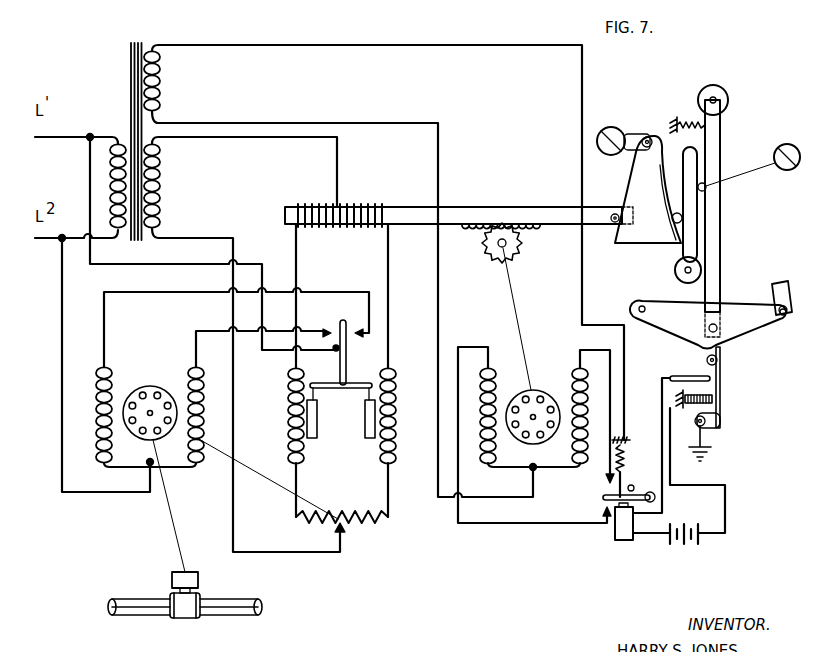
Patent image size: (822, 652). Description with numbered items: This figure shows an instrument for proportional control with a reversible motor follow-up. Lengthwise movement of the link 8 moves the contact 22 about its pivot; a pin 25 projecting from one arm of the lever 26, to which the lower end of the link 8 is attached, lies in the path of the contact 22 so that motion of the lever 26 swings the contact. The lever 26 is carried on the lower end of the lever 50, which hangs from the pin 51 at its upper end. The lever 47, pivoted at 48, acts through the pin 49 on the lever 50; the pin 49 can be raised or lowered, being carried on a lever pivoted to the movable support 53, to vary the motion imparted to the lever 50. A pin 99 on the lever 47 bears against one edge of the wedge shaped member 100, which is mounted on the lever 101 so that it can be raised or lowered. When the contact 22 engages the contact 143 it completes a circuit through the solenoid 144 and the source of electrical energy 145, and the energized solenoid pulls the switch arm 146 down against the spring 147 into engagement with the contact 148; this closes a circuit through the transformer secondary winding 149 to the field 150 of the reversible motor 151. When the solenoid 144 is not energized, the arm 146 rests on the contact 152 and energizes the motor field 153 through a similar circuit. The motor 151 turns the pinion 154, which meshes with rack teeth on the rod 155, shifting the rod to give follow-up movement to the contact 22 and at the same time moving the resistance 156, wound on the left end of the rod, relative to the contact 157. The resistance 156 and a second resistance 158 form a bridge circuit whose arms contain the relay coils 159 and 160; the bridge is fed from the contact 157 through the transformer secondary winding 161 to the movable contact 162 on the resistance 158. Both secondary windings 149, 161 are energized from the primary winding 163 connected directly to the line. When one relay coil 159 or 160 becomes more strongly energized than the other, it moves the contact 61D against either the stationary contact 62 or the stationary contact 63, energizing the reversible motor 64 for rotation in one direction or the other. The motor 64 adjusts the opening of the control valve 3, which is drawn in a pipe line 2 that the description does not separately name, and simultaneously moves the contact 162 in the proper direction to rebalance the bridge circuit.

The pipe 2 is at (150, 607).
The control valve 3 is at (186, 572).
The link 8 is at (786, 283).
The contact 22 is at (720, 388).
The pin 25 is at (718, 358).
The lever 26 is at (738, 309).
The lever 47 is at (691, 203).
The pivot 48 is at (683, 271).
The pin 49 is at (705, 184).
The lever 50 is at (721, 213).
The pin 51 is at (715, 98).
The movable support 53 is at (789, 145).
The contact 61D is at (351, 315).
The stationary contact 62 is at (360, 337).
The stationary contact 63 is at (326, 331).
The reversible motor 64 is at (143, 392).
The pin 99 is at (682, 221).
The wedge shaped member 100 is at (625, 246).
The lever 101 is at (630, 135).
The contact 143 is at (687, 376).
The solenoid 144 is at (625, 542).
The source of electrical energy 145 is at (685, 527).
The switch arm 146 is at (602, 498).
The spring 147 is at (624, 460).
The contact 148 is at (605, 516).
The transformer secondary winding 149 is at (162, 92).
The field 150 is at (497, 385).
The reversible motor 151 is at (535, 391).
The contact 152 is at (613, 214).
The motor field 153 is at (574, 372).
The pinion 154 is at (488, 254).
The rod 155 is at (485, 210).
The resistance 156 is at (303, 206).
The contact 157 is at (338, 199).
The resistance 158 is at (339, 512).
The relay coil 159 is at (288, 392).
The relay coil 160 is at (396, 395).
The transformer secondary winding 161 is at (162, 184).
The movable contact 162 is at (345, 540).
The primary winding 163 is at (113, 150).